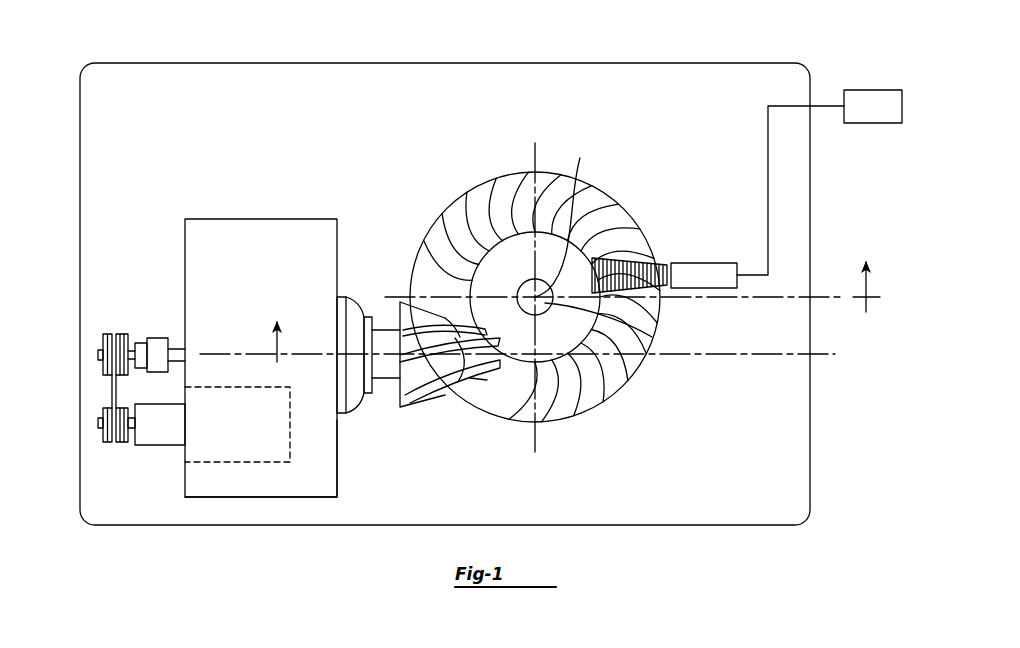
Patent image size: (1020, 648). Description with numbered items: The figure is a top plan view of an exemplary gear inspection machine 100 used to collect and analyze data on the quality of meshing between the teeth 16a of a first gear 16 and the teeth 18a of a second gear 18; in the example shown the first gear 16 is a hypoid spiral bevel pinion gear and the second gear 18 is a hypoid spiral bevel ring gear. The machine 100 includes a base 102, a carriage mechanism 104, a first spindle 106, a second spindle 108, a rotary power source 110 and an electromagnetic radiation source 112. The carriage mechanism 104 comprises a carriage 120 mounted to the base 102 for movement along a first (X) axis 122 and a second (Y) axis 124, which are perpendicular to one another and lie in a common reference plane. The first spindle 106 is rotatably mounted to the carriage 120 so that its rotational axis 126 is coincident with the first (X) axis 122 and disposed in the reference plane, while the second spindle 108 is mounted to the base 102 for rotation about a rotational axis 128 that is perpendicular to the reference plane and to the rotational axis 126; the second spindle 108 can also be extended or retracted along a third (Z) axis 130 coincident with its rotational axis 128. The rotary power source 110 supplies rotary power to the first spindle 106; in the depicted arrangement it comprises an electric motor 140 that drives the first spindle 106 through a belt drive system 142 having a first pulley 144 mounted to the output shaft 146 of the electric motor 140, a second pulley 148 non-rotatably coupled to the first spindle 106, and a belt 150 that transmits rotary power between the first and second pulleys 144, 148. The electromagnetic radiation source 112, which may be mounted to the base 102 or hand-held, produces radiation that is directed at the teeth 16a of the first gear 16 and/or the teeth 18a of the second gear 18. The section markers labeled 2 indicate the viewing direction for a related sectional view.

The gear inspection machine 100 is at (156, 538).
The base 102 is at (185, 72).
The carriage mechanism 104 is at (231, 215).
The first spindle 106 is at (156, 338).
The second spindle 108 is at (652, 337).
The rotary power source 110 is at (114, 419).
The electromagnetic radiation source 112 is at (718, 263).
The carriage 120 is at (287, 498).
The first (X) axis 122 is at (762, 357).
The second (Y) axis 124 is at (538, 433).
The rotational axis of the first spindle 126 is at (774, 399).
The rotational axis of the second spindle 128 is at (578, 170).
The third (Z) axis 130 is at (603, 234).
The electric motor 140 is at (230, 463).
The belt drive system 142 is at (102, 384).
The first pulley 144 is at (108, 443).
The output shaft 146 is at (152, 446).
The second pulley 148 is at (109, 334).
The belt 150 is at (112, 398).
The first gear 16 is at (437, 395).
The teeth of the first gear 16a is at (400, 393).
The second gear 18 is at (557, 274).
The teeth of the second gear 18a is at (516, 181).
The section line 2 is at (575, 298).